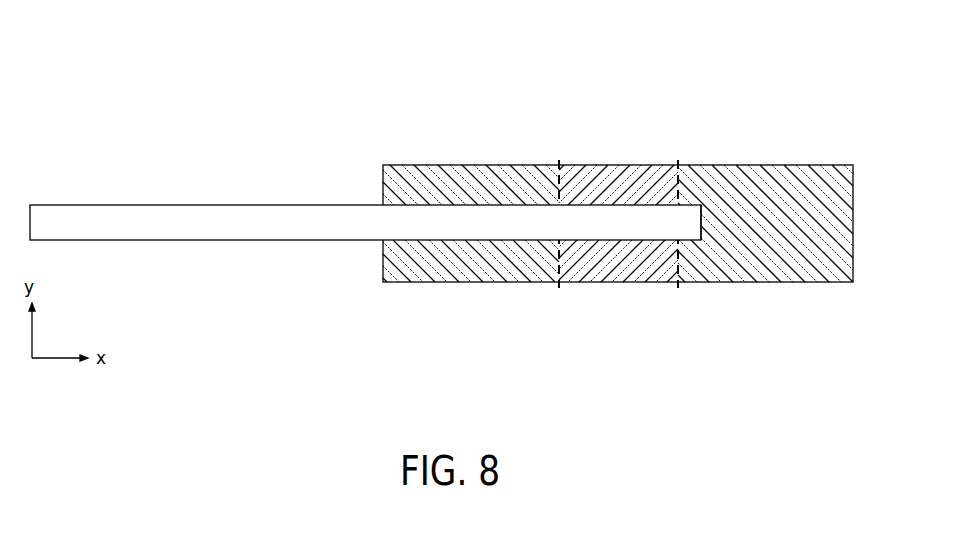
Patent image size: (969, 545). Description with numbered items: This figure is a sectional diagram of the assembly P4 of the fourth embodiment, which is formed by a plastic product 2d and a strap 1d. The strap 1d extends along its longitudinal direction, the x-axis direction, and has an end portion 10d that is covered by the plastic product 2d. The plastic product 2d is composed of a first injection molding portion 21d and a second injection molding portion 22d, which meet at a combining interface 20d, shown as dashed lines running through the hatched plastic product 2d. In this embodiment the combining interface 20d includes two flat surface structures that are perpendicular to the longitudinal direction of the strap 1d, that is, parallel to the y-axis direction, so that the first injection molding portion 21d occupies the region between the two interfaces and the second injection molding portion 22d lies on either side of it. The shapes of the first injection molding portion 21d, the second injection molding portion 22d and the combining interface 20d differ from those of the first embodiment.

The assembly P4 is at (157, 78).
The strap 1d is at (123, 205).
The plastic product 2d is at (440, 282).
The end portion 10d is at (703, 212).
The combining interface 20d is at (558, 282).
The first injection molding portion 21d is at (613, 172).
The second injection molding portion 22d is at (395, 258).